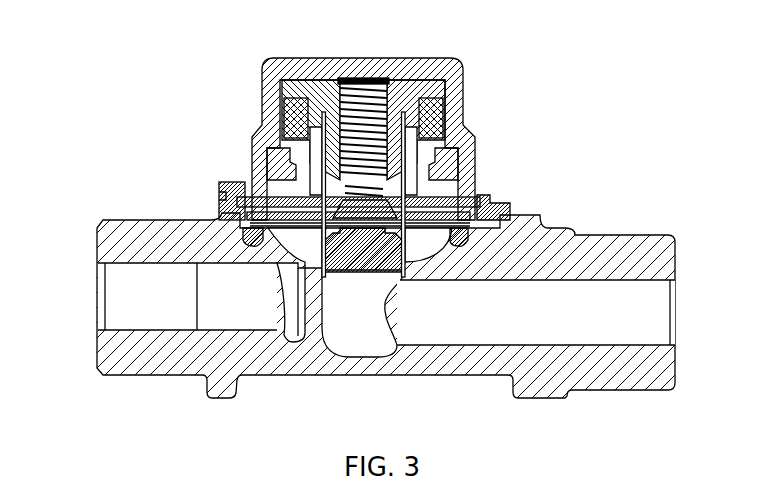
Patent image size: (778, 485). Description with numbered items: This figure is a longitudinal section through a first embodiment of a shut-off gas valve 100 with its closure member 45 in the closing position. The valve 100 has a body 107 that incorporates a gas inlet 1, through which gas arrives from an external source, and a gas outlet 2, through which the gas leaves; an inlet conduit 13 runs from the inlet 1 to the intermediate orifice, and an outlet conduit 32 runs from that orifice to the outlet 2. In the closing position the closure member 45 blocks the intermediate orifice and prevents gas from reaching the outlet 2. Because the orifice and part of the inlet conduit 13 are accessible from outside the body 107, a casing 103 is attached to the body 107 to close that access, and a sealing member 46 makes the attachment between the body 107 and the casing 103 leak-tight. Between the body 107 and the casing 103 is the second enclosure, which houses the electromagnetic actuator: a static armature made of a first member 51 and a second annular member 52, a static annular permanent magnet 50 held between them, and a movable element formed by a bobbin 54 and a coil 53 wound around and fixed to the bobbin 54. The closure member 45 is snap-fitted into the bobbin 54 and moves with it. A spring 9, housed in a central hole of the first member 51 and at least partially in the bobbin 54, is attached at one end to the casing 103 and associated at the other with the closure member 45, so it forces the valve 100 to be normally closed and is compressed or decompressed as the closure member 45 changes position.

The gas inlet 1 is at (90, 308).
The gas outlet 2 is at (686, 318).
The spring 9 is at (377, 77).
The inlet conduit 13 is at (145, 278).
The outlet conduit 32 is at (612, 297).
The closure member 45 is at (363, 250).
The sealing member 46 is at (466, 243).
The permanent magnet 50 is at (441, 90).
The first member 51 is at (463, 86).
The second annular member 52 is at (465, 160).
The coil 53 is at (266, 118).
The bobbin 54 is at (300, 193).
The shut-off gas valve 100 is at (386, 209).
The casing 103 is at (262, 82).
The body 107 is at (575, 248).